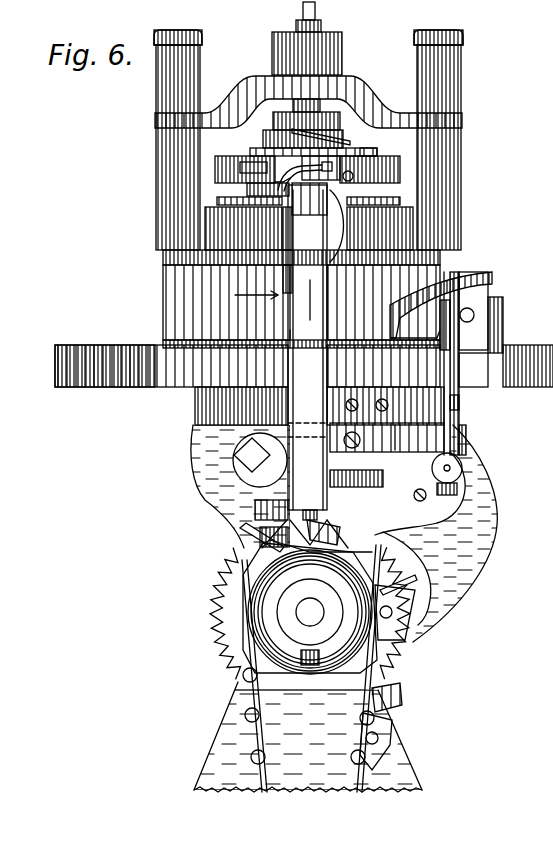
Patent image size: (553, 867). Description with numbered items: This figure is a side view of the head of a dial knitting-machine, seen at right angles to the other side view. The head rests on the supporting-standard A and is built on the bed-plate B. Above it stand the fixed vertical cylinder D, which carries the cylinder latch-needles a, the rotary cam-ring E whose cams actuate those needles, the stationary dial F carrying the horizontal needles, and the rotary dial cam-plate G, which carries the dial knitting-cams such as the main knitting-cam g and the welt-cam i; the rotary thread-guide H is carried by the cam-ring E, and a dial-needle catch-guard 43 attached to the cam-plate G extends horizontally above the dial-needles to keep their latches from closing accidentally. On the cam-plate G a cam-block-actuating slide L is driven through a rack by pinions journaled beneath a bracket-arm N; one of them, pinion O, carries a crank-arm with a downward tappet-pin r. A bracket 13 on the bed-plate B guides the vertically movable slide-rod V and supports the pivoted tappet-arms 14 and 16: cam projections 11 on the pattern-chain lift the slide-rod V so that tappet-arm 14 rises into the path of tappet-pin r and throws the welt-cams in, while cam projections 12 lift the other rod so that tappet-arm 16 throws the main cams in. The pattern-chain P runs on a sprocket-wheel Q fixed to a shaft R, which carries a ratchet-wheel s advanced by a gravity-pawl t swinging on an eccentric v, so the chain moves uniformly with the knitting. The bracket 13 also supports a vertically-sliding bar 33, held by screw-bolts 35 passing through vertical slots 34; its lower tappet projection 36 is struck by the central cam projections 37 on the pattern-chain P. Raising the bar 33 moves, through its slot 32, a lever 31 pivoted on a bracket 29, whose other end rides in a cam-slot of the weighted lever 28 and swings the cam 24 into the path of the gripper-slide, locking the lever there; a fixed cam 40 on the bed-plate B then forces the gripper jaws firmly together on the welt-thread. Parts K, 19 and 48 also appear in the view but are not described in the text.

The cross head / arch bar K is at (303, 12).
The pinion O is at (297, 123).
The arm 19 is at (327, 132).
The bracket-arm N is at (378, 150).
The cam-block-actuating slide L is at (378, 154).
The rotary dial cam-plate G is at (215, 170).
The main knitting-cam g is at (253, 167).
The tappet-pin r is at (282, 176).
The rotary thread-guide H is at (300, 173).
The tappet-arm 14 is at (312, 184).
The dial-needle catch-guard 43 is at (345, 174).
The tappet-arm 16 is at (318, 222).
The welt-cam i is at (247, 190).
The stationary dial F is at (217, 200).
The fixed vertical cylinder D is at (307, 231).
The rotary cam-ring E is at (291, 299).
The screw-bolts 35 is at (283, 262).
The vertical slots 34 is at (283, 278).
The vertically-sliding bar 33 is at (290, 329).
The bracket 13 is at (307, 352).
The cam 24 is at (458, 275).
The fixed cam 40 is at (503, 342).
The bed-plate B is at (304, 358).
The bracket 29 is at (319, 406).
The lever 28 is at (459, 392).
The lever 31 is at (288, 433).
The slot 32 is at (399, 437).
The cylinder latch-needles a is at (145, 522).
The tappet projection 36 is at (271, 510).
The central cam projections 37 is at (333, 556).
The slide-rod V is at (305, 525).
The cam projections 11 is at (402, 698).
The cam projections 12 is at (412, 640).
The eccentric v is at (420, 493).
The gravity-pawl t is at (482, 528).
The ratchet-wheel s is at (212, 610).
The sprocket-wheel Q is at (300, 692).
The shaft R is at (310, 612).
The blocks 48 is at (392, 739).
The pattern-chain P is at (255, 748).
The supporting-standard A is at (309, 737).